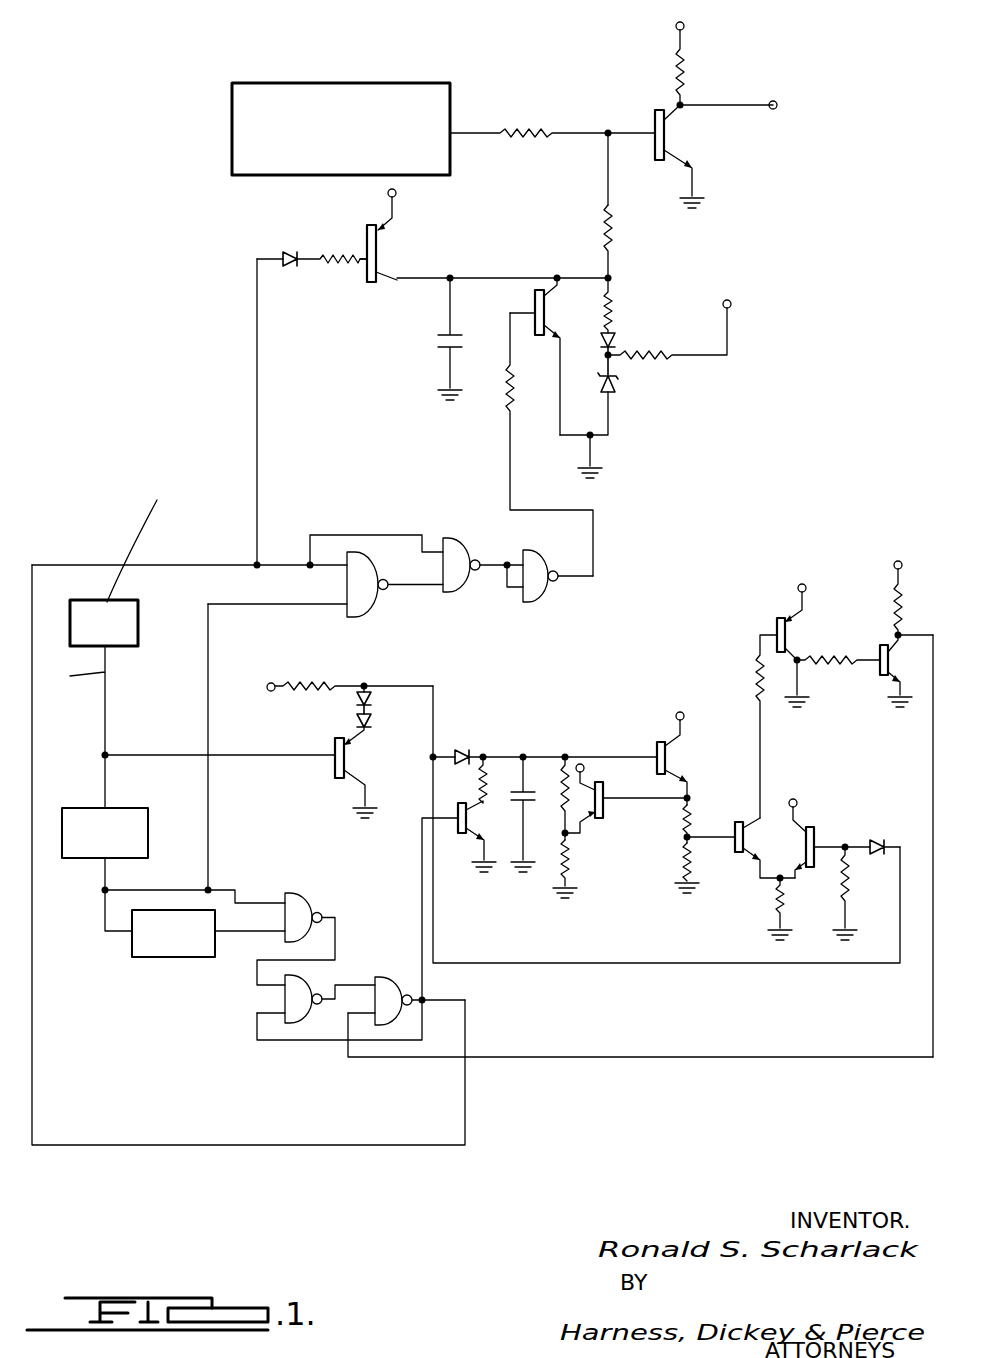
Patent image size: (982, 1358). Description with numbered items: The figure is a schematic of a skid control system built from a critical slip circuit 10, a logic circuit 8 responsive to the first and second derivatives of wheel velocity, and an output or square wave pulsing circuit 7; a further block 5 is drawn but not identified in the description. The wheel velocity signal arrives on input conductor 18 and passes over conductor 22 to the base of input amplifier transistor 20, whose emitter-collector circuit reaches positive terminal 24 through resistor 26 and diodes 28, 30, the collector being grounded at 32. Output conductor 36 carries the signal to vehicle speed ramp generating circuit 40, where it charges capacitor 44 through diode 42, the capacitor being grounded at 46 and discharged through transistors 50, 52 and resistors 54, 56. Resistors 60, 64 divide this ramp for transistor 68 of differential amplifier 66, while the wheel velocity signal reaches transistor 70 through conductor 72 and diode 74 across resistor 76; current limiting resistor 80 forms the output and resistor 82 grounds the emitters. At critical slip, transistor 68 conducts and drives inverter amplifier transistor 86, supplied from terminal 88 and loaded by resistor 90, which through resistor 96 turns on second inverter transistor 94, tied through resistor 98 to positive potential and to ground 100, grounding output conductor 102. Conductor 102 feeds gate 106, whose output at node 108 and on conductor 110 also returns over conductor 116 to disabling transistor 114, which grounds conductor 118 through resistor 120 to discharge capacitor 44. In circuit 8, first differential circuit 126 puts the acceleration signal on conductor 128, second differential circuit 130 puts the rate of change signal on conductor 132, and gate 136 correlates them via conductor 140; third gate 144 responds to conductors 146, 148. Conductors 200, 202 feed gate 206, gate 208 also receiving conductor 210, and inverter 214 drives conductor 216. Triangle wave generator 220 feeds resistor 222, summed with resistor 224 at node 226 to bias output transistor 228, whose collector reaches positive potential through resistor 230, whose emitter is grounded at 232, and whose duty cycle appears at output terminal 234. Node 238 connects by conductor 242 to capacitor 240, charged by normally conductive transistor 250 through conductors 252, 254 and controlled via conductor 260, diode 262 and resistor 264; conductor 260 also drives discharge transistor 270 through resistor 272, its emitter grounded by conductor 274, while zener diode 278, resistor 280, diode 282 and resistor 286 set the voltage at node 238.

The voltage reference block 5 is at (748, 472).
The output circuit 7 is at (380, 385).
The logic circuit 8 is at (268, 845).
The critical slip circuit 10 is at (668, 848).
The input conductor 18 is at (107, 677).
The input amplifier transistor 20 is at (333, 765).
The conductor 22 is at (165, 740).
The terminal 24 is at (270, 690).
The resistor 26 is at (320, 683).
The diode 28 is at (370, 697).
The diode 30 is at (403, 722).
The ground 32 is at (360, 792).
The output conductor 36 is at (433, 707).
The vehicle speed ramp generating circuit 40 is at (497, 897).
The diode 42 is at (460, 745).
The capacitor 44 is at (490, 815).
The ground 46 is at (535, 848).
The transistor 50 is at (672, 770).
The transistor 52 is at (605, 806).
The resistor 54 is at (560, 780).
The resistor 56 is at (570, 857).
The resistor 60 is at (693, 808).
The resistor 64 is at (683, 853).
The differential amplifier 66 is at (750, 890).
The transistor 68 is at (732, 853).
The transistor 70 is at (815, 830).
The conductor 72 is at (773, 963).
The diode 74 is at (875, 842).
The resistor 76 is at (853, 882).
The current limiting resistor 80 is at (757, 660).
The resistor 82 is at (775, 908).
The inverter amplifier transistor 86 is at (790, 636).
The terminal 88 is at (797, 588).
The resistor 90 is at (805, 680).
The second inverter transistor 94 is at (882, 677).
The resistor 96 is at (828, 664).
The resistor 98 is at (897, 600).
The ground 100 is at (905, 688).
The output conductor 102 is at (712, 1058).
The and gate 106 is at (387, 1022).
The output node 108 is at (425, 1002).
The conductor 110 is at (418, 1003).
The disabling transistor 114 is at (462, 837).
The conductor 116 is at (428, 980).
The conductor 118 is at (503, 745).
The resistor 120 is at (433, 784).
The first differential circuit 126 is at (140, 808).
The output conductor 128 is at (97, 892).
The second differential circuit 130 is at (135, 957).
The output conductor 132 is at (247, 933).
The output and gate 136 is at (302, 893).
The conductor 140 is at (140, 890).
The third gate 144 is at (317, 983).
The conductor 146 is at (272, 1042).
The conductor 148 is at (255, 978).
The conductor 200 is at (77, 565).
The conductor 202 is at (218, 604).
The and gate 206 is at (373, 603).
The second gate 208 is at (463, 588).
The conductor 210 is at (378, 535).
The inverter circuit 214 is at (550, 598).
The conductor 216 is at (596, 540).
The triangle wave generator 220 is at (447, 83).
The resistor 222 is at (530, 130).
The second resistor 224 is at (615, 238).
The node 226 is at (607, 135).
The output transistor 228 is at (668, 142).
The resistor 230 is at (683, 62).
The ground 232 is at (694, 190).
The output terminal 234 is at (778, 105).
The node 238 is at (612, 279).
The capacitor 240 is at (450, 373).
The conductor 242 is at (508, 278).
The transistor 250 is at (360, 278).
The conductor 252 is at (385, 226).
The conductor 254 is at (423, 278).
The conductor 260 is at (257, 413).
The diode 262 is at (283, 259).
The resistor 264 is at (326, 258).
The discharge transistor 270 is at (533, 303).
The resistor 272 is at (495, 372).
The conductor 274 is at (558, 422).
The zener diode 278 is at (620, 392).
The resistor 280 is at (612, 312).
The diode 282 is at (618, 343).
The resistor 286 is at (678, 353).